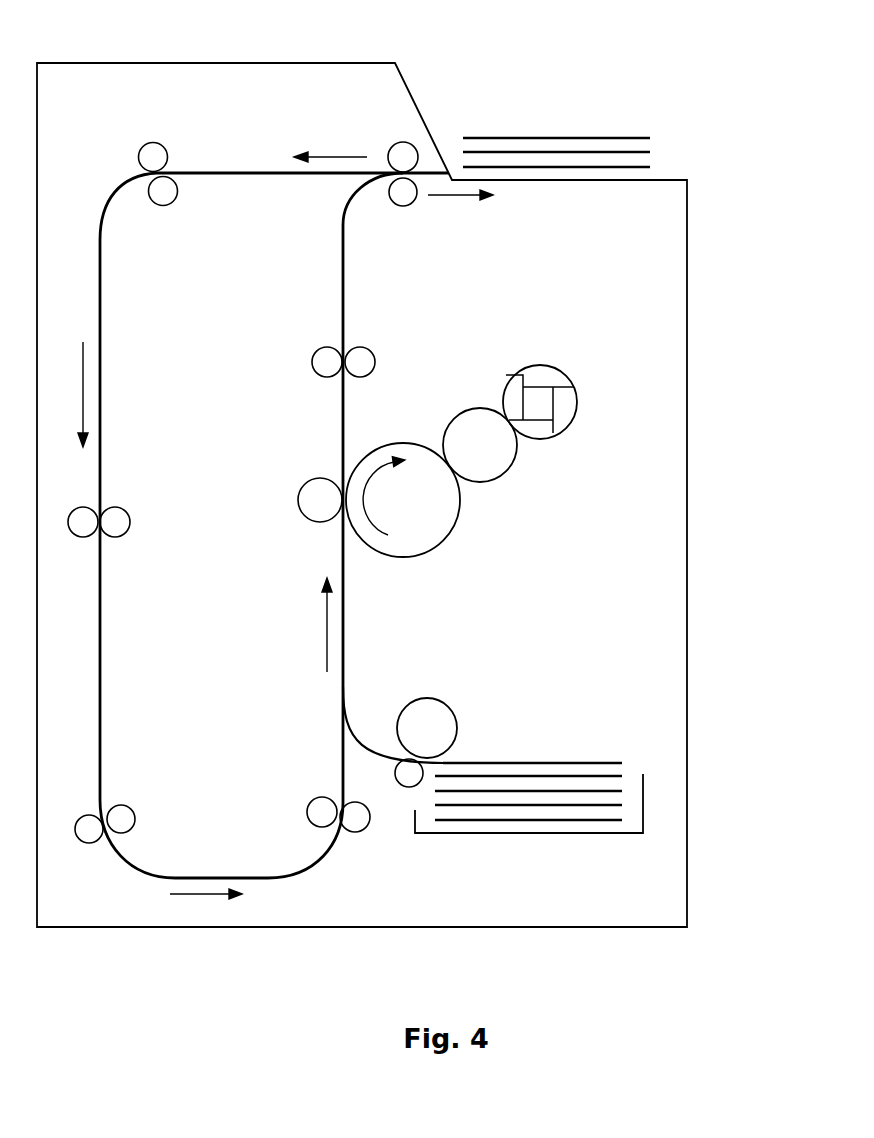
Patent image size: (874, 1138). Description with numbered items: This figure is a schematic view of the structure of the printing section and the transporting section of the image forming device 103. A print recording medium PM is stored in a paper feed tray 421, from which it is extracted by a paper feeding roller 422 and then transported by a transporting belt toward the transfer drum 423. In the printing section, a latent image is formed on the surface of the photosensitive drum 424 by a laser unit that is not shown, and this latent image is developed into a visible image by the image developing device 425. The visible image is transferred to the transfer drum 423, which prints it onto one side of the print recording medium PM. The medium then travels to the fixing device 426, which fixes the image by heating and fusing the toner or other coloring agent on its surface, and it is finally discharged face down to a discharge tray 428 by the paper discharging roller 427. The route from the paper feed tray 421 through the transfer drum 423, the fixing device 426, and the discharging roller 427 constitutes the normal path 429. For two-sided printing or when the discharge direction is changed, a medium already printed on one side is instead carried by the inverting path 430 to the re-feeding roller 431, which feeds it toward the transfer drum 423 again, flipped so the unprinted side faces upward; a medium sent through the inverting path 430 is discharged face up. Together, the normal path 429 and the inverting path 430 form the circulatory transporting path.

The image forming device 103 is at (694, 269).
The paper feed tray 421 is at (602, 833).
The paper feeding roller 422 is at (427, 698).
The transfer drum 423 is at (403, 443).
The photosensitive drum 424 is at (480, 408).
The image developing device 425 is at (540, 365).
The fixing device 426 is at (312, 362).
The paper discharging roller 427 is at (403, 206).
The discharge tray 428 is at (673, 180).
The normal path 429 is at (343, 270).
The inverting path 430 is at (100, 625).
The re-feeding roller 431 is at (355, 832).
The print recording medium PM is at (555, 763).